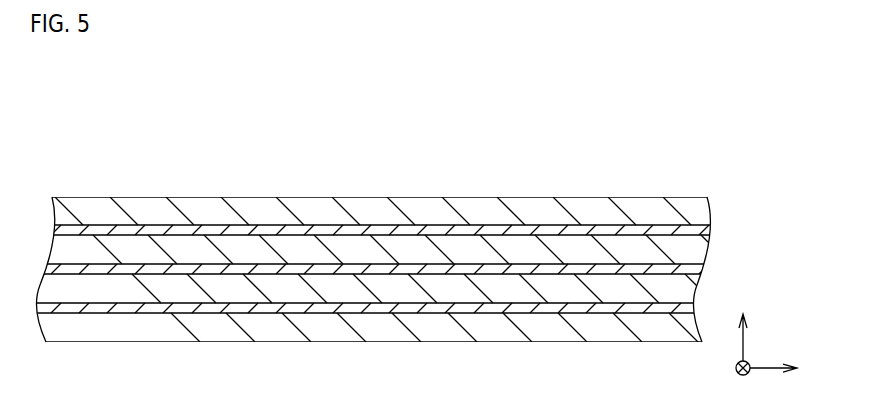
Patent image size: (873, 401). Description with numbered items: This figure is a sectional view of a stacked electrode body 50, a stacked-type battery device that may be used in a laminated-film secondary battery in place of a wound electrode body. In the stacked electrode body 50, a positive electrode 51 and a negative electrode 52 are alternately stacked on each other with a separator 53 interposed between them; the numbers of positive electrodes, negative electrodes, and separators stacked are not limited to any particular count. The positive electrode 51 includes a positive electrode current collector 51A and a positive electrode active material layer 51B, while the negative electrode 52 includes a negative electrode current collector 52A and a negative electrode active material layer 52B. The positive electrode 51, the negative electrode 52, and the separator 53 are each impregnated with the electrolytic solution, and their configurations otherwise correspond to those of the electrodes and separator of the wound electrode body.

The stacked electrode body 50 is at (719, 123).
The positive electrode 51 is at (287, 98).
The positive electrode current collector 51A is at (105, 230).
The positive electrode active material layer 51B is at (265, 207).
The negative electrode 52 is at (587, 98).
The negative electrode current collector 52A is at (402, 305).
The negative electrode active material layer 52B is at (572, 285).
The separator 53 is at (655, 270).